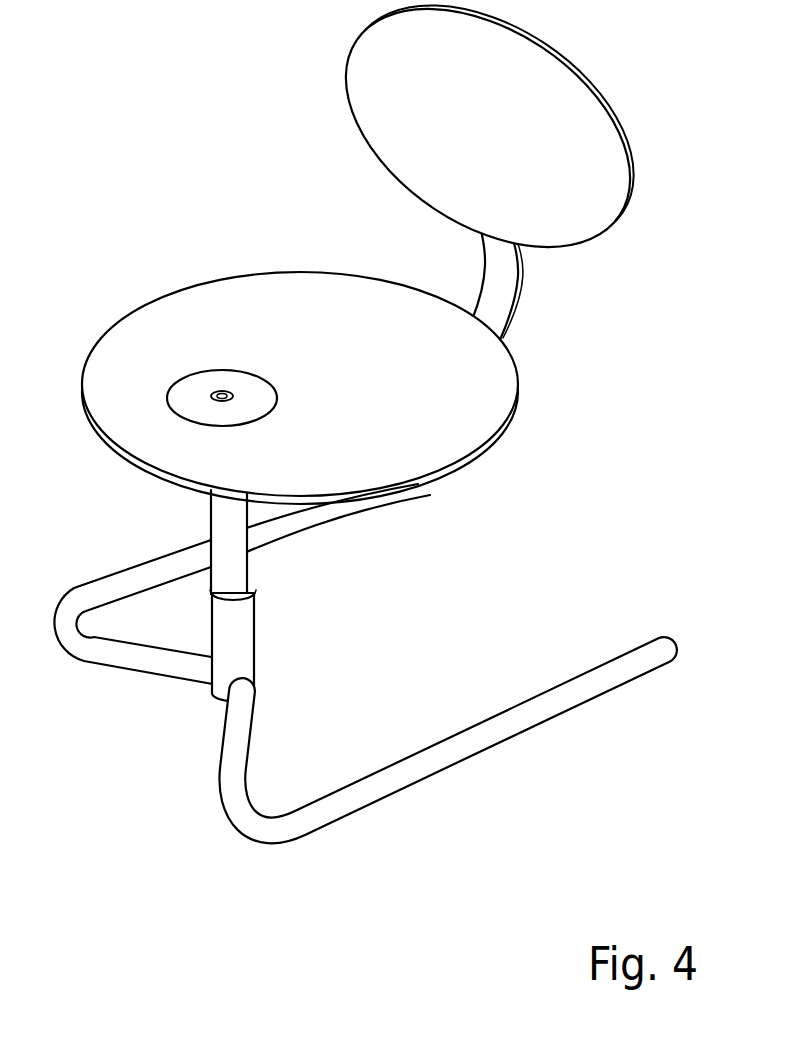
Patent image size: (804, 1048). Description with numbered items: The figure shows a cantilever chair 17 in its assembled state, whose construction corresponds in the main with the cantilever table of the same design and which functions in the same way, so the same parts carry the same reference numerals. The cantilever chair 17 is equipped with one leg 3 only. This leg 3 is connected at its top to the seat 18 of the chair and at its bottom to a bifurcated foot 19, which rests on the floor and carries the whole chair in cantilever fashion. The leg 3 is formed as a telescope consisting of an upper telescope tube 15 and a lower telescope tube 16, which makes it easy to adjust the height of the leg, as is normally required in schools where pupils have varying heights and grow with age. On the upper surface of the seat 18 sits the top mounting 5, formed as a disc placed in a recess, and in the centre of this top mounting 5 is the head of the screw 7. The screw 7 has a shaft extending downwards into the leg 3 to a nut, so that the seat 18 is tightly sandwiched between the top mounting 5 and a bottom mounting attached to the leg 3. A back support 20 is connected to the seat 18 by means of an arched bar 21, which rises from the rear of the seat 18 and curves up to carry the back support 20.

The cantilever chair 17 is at (365, 415).
The back support 20 is at (581, 71).
The arched bar 21 is at (528, 293).
The seat 18 is at (506, 435).
The top mounting 5 is at (258, 387).
The screw 7 is at (221, 392).
The upper telescope tube 15 is at (258, 543).
The leg 3 is at (256, 653).
The lower telescope tube 16 is at (226, 644).
The bifurcated foot 19 is at (514, 712).